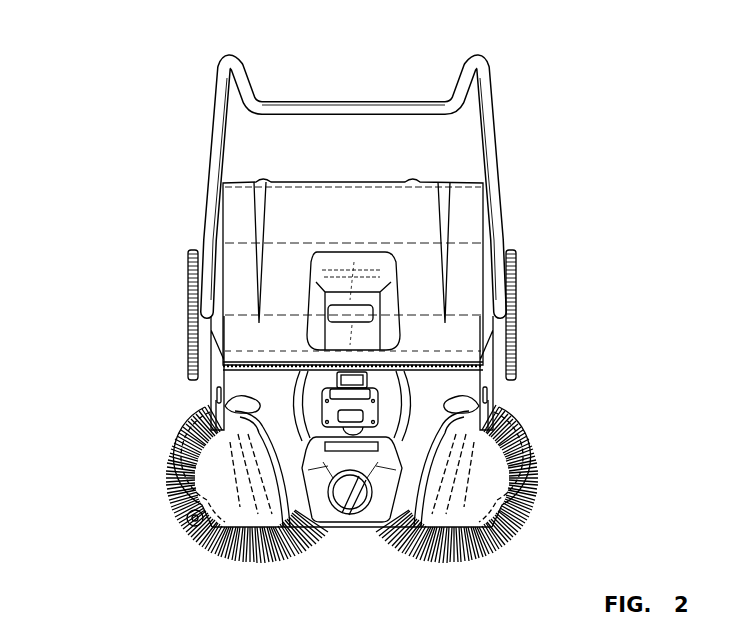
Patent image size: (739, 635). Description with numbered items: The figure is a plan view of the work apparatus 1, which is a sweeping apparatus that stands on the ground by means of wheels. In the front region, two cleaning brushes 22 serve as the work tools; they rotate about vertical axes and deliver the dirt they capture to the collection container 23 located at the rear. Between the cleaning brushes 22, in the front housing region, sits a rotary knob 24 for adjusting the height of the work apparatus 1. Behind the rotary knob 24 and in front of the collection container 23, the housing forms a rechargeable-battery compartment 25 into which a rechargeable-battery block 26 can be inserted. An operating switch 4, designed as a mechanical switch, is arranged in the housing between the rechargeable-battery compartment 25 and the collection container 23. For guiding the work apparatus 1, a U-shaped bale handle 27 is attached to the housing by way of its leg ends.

The work apparatus 1 is at (130, 238).
The bale handle 27 is at (333, 105).
The collection container 23 is at (340, 223).
The operating switch 4 is at (362, 371).
The rechargeable-battery block 26 is at (337, 407).
The rechargeable-battery compartment 25 is at (388, 405).
The rotary knob 24 is at (348, 514).
The cleaning brushes 22 is at (172, 505).